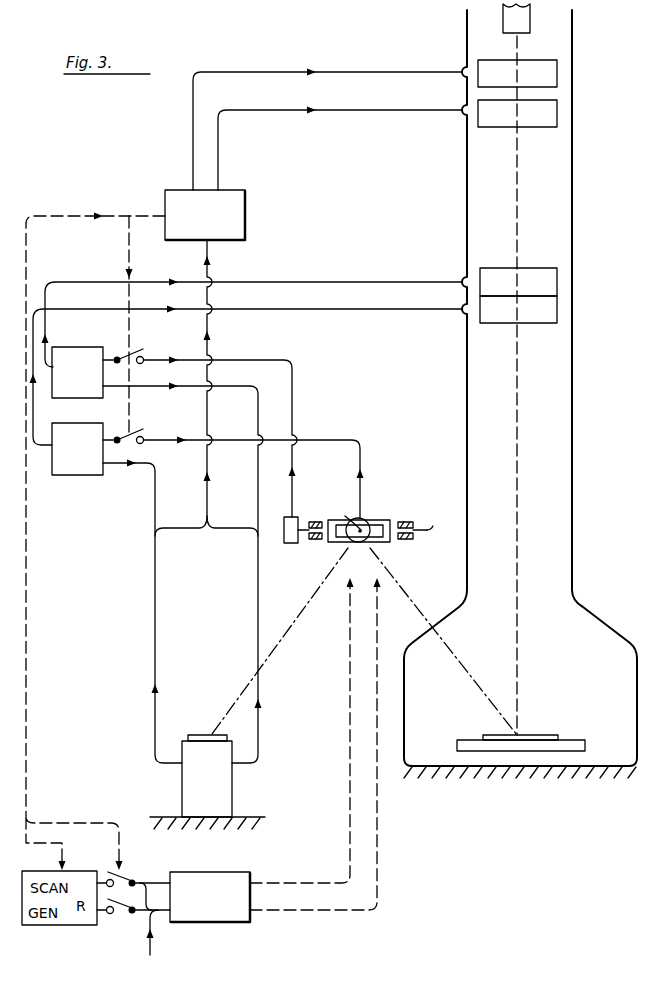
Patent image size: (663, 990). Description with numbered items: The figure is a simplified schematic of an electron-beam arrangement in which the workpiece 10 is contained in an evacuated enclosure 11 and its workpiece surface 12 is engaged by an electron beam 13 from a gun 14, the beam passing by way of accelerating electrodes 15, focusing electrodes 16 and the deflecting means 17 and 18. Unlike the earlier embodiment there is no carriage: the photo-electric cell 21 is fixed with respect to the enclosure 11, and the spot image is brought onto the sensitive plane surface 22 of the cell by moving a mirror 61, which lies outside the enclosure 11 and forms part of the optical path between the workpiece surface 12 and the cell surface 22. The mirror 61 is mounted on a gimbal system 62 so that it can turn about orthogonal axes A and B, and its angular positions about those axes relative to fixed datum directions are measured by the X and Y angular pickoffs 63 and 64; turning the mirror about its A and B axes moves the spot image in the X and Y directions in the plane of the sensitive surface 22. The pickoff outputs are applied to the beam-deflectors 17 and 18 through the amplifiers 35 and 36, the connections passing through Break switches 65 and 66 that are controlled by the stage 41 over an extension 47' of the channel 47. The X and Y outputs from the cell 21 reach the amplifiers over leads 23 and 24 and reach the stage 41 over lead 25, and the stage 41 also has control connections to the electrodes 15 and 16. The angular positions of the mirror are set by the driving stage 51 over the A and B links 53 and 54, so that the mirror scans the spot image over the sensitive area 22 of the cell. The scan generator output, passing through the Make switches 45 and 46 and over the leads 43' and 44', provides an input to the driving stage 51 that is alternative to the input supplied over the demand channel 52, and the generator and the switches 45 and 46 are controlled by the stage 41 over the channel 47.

The workpiece 10 is at (545, 752).
The evacuated enclosure 11 is at (572, 175).
The workpiece surface 12 is at (486, 735).
The electron beam 13 is at (537, 385).
The gun 14 is at (528, 33).
The accelerating electrodes 15 is at (478, 63).
The focusing electrodes 16 is at (492, 127).
The deflecting means 17 is at (536, 268).
The deflecting means 18 is at (528, 323).
The cell 21 is at (205, 802).
The sensitive plane surface 22 is at (195, 735).
The lead 23 is at (292, 405).
The lead 24 is at (154, 499).
The lead 25 is at (207, 512).
The amplifier 35 is at (62, 347).
The amplifier 36 is at (78, 475).
The stage 41 is at (245, 236).
The lead 43' is at (159, 876).
The lead 44' is at (139, 935).
The Make switch 45 is at (130, 874).
The Make switch 46 is at (121, 919).
The channel 47 is at (95, 532).
The extension of channel 47' is at (110, 324).
The driving stage 51 is at (236, 922).
The demand channel 52 is at (160, 927).
The A link 53 is at (350, 855).
The B link 54 is at (378, 868).
The mirror 61 is at (345, 543).
The gimbal system 62 is at (382, 543).
The angular pickoff 63 is at (298, 517).
The angular pickoff 64 is at (365, 518).
The Break switch 65 is at (143, 350).
The Break switch 66 is at (143, 430).